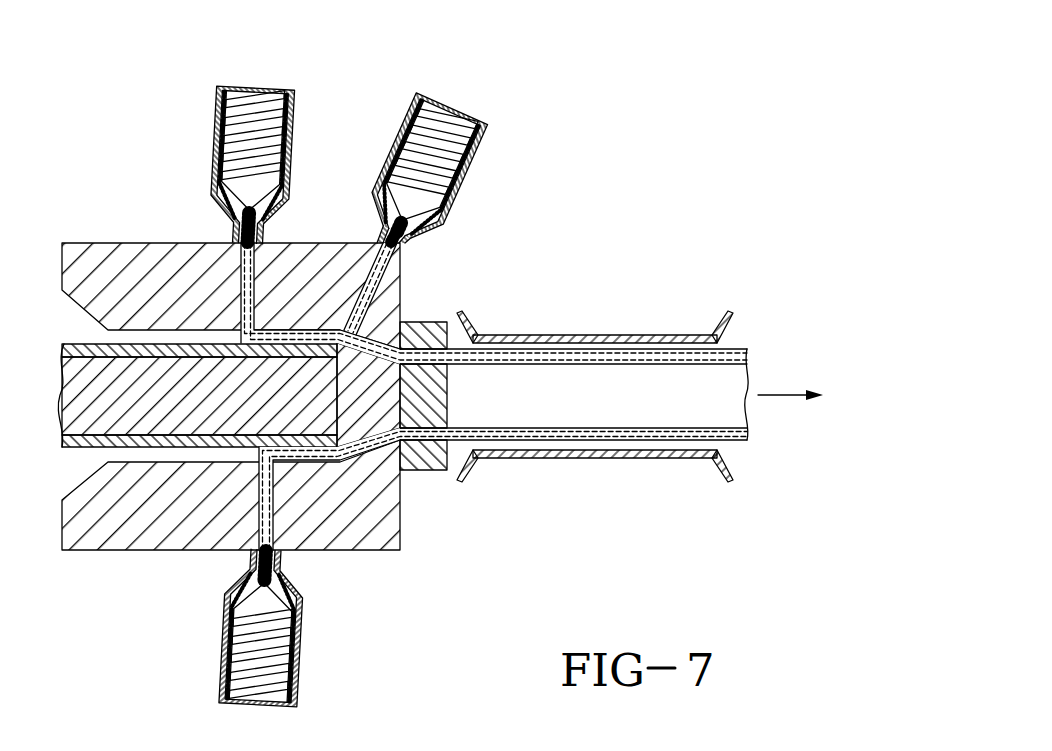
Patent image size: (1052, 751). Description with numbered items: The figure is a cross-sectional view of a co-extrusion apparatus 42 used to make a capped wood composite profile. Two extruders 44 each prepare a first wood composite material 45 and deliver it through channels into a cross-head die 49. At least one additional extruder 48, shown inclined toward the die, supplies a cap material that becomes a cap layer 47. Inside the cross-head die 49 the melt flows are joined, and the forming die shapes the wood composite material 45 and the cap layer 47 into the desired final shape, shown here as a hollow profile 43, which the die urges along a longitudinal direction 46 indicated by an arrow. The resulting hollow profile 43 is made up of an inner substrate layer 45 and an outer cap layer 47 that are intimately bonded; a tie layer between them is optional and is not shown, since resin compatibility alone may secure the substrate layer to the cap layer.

The co-extrusion apparatus 42 is at (134, 104).
The hollow profile 43 is at (607, 410).
The extruder 44 is at (294, 128).
The first wood composite material 45 is at (232, 208).
The longitudinal direction 46 is at (790, 399).
The cap layer 47 is at (437, 207).
The additional extruder 48 is at (478, 152).
The cross-head die 49 is at (418, 315).